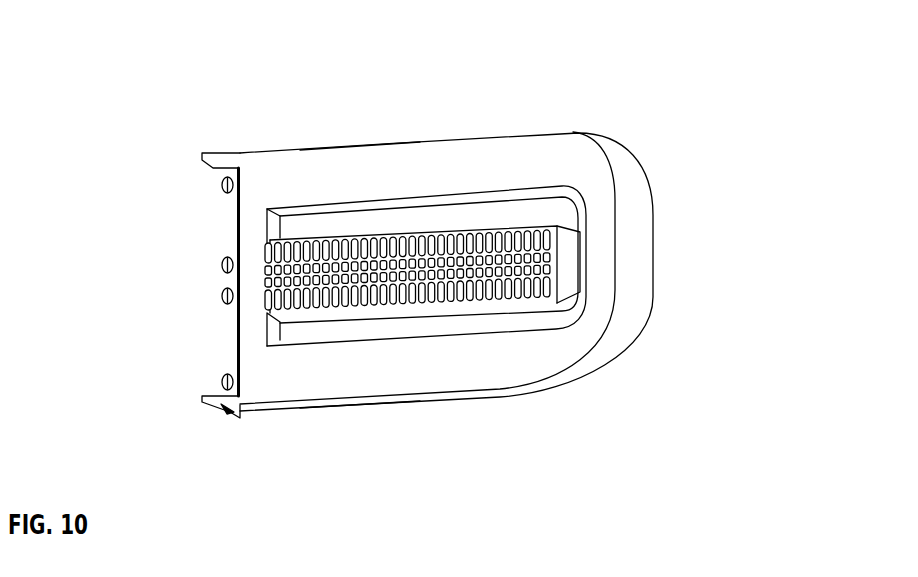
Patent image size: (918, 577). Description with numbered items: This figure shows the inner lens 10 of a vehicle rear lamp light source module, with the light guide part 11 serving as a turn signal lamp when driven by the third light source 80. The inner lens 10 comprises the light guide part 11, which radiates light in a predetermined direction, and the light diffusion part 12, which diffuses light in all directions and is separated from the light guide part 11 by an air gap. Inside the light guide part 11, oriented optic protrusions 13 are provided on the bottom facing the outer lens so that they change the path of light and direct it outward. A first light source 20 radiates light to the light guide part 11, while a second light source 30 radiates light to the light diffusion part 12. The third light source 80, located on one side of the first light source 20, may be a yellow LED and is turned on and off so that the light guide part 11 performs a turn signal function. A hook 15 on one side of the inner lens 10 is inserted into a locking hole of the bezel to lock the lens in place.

The inner lens 10 is at (485, 139).
The light guide part 11 is at (553, 258).
The light diffusion part 12 is at (372, 165).
The oriented optic protrusions 13 is at (431, 322).
The hook 15 is at (223, 152).
The first light source 20 is at (221, 265).
The second light source 30 is at (221, 184).
The third light source 80 is at (221, 296).